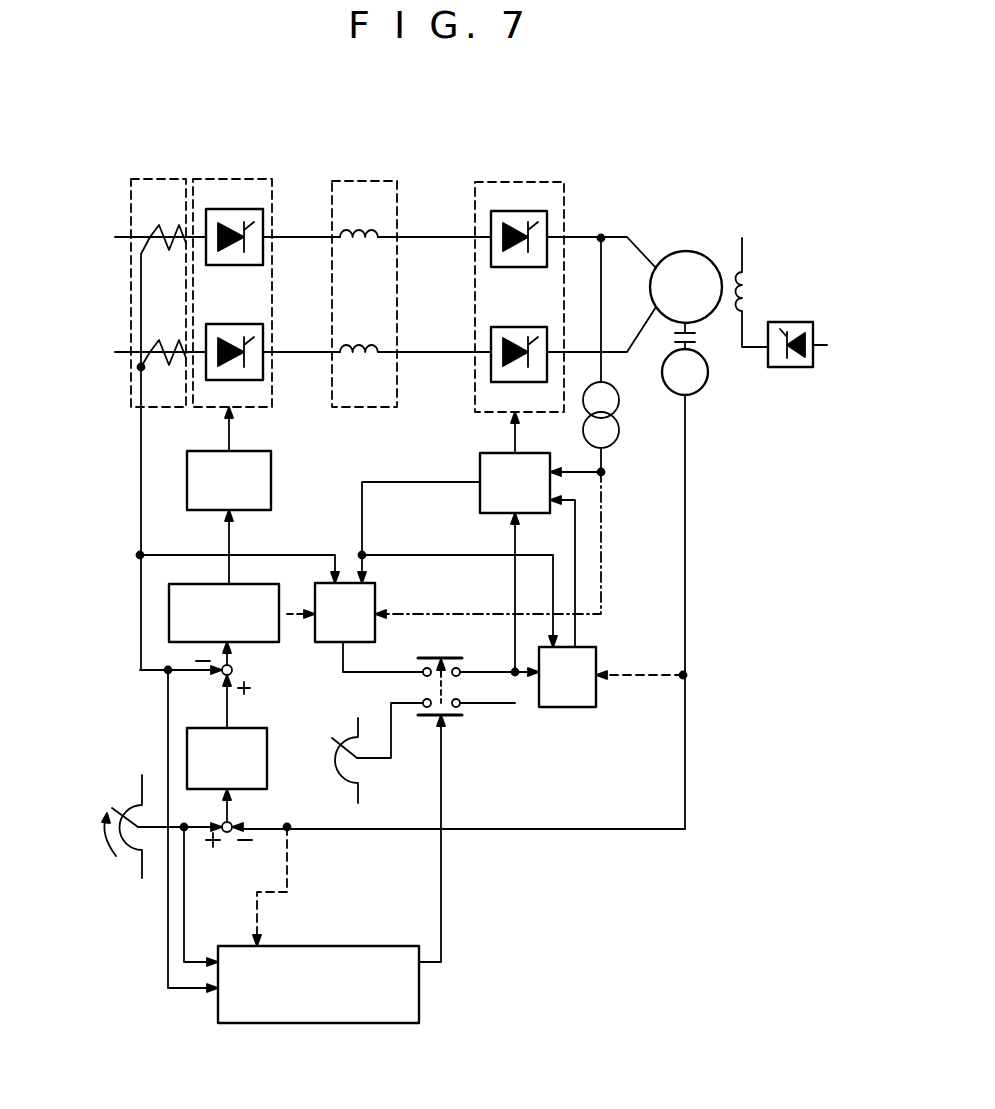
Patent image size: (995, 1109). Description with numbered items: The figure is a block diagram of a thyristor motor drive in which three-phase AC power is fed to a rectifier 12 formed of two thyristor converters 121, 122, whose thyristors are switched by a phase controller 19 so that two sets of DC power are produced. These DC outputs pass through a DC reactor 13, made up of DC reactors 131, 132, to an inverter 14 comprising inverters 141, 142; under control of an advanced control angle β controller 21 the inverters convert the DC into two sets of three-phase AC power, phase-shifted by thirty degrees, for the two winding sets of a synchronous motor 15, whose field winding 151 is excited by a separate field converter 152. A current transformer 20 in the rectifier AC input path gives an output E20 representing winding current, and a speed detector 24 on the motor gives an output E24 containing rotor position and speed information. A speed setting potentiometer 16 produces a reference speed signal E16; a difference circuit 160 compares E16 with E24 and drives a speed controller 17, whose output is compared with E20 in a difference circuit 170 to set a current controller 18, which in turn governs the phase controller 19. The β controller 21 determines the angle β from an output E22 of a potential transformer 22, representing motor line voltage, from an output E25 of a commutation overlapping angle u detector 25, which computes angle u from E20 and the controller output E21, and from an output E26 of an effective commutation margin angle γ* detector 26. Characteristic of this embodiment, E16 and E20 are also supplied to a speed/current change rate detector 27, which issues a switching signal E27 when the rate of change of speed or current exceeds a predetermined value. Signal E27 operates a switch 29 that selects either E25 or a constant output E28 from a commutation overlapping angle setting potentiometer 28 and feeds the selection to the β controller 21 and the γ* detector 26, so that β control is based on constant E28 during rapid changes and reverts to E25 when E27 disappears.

The rectifier 12 is at (232, 274).
The converter 121 is at (232, 209).
The converter 122 is at (228, 324).
The DC reactor 13 is at (366, 274).
The DC reactor 131 is at (369, 245).
The DC reactor 132 is at (362, 362).
The inverter 14 is at (519, 277).
The inverter 141 is at (530, 268).
The inverter 142 is at (503, 329).
The synchronous motor 15 is at (696, 252).
The field winding 151 is at (752, 284).
The field converter 152 is at (794, 369).
The speed setting potentiometer 16 is at (128, 855).
The difference circuit 160 is at (220, 822).
The speed controller 17 is at (197, 725).
The difference circuit 170 is at (232, 669).
The current controller 18 is at (168, 620).
The phase controller 19 is at (272, 485).
The current transformer 20 is at (127, 355).
The advanced control angle β controller 21 is at (476, 470).
The potential transformer 22 is at (620, 430).
The speed detector 24 is at (698, 392).
The commutation overlapping angle u detector 25 is at (328, 642).
The effective commutation margin angle γ* detector 26 is at (600, 672).
The speed/current change rate detector 27 is at (386, 1025).
The commutation overlapping angle setting potentiometer 28 is at (335, 750).
The switch 29 is at (447, 721).
The reference speed signal E16 is at (188, 917).
The current transformer output E20 is at (138, 553).
The β controller output E21 is at (364, 555).
The potential transformer output E22 is at (605, 472).
The speed detector output E24 is at (688, 678).
The u detector output E25 is at (387, 671).
The γ* detector output E26 is at (584, 572).
The switching signal E27 is at (442, 902).
The setting potentiometer output E28 is at (389, 765).